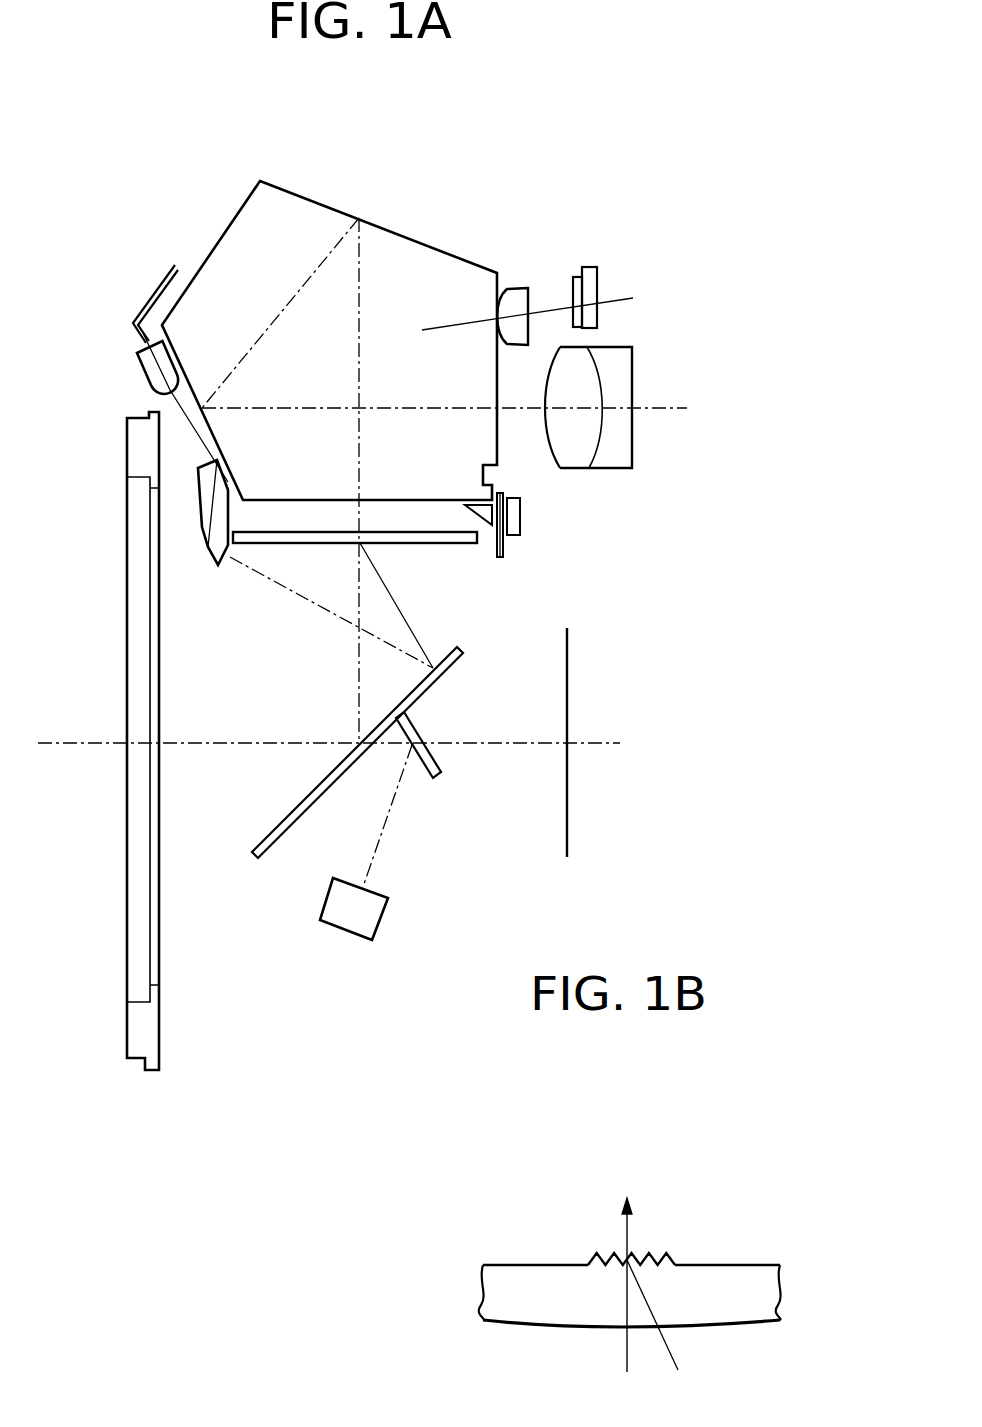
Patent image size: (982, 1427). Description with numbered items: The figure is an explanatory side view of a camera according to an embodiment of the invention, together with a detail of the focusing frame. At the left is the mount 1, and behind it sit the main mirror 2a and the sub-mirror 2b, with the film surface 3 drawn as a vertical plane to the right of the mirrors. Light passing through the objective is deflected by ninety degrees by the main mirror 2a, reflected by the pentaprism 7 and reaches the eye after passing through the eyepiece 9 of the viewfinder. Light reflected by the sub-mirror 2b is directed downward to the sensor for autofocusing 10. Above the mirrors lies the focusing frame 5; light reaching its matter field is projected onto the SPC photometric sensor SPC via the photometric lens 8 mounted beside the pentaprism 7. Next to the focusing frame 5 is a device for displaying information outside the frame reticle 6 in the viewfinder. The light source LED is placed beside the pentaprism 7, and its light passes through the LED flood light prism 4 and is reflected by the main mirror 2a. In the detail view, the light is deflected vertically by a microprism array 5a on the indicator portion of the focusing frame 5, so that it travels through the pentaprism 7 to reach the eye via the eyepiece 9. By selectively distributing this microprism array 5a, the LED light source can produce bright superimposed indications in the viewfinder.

In FIG. 1A, the mount 1 is at (143, 1020).
In FIG. 1A, the main mirror 2a is at (270, 857).
In FIG. 1A, the sub-mirror 2b is at (412, 723).
In FIG. 1A, the film surface 3 is at (567, 818).
In FIG. 1A, the LED flood light prism 4 is at (215, 502).
In FIG. 1A, the focusing frame 5 is at (453, 545).
In FIG. 1B, the focusing frame 5 is at (500, 1295).
In FIG. 1B, the microprism array 5a is at (640, 1248).
In FIG. 1A, the device for displaying information outside the frame reticle 6 is at (513, 518).
In FIG. 1A, the pentaprism 7 is at (325, 225).
In FIG. 1A, the photometric lens 8 is at (517, 297).
In FIG. 1A, the eyepiece 9 is at (620, 383).
In FIG. 1A, the sensor for autofocusing 10 is at (370, 915).
In FIG. 1A, the LED light source LED is at (147, 363).
In FIG. 1A, the SPC photometric sensor SPC is at (590, 292).